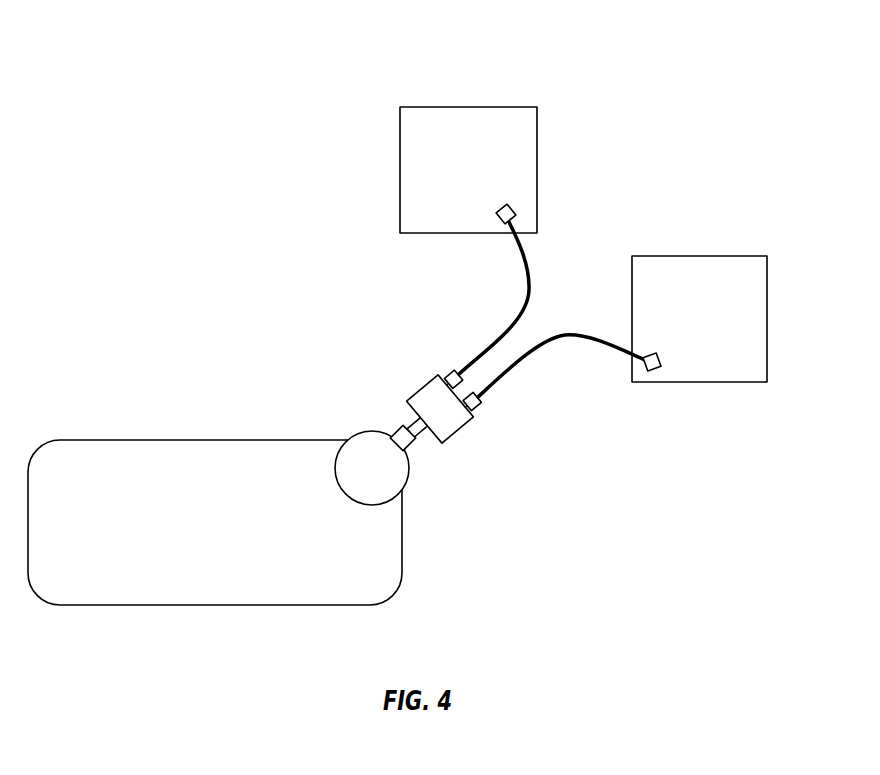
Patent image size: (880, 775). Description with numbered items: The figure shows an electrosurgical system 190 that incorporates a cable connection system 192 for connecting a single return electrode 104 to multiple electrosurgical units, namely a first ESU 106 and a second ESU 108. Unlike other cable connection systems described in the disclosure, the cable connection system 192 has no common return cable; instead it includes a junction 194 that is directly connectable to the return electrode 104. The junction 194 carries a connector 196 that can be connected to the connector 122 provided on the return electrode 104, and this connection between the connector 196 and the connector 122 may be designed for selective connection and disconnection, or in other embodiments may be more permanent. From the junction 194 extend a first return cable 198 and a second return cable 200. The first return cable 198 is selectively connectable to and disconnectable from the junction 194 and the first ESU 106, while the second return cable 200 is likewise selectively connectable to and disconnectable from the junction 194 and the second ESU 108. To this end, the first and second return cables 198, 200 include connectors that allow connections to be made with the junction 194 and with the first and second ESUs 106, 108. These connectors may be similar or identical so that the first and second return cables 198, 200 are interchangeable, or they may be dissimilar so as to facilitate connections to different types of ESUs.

The return electrode 104 is at (188, 606).
The first ESU 106 is at (502, 107).
The second ESU 108 is at (767, 290).
The connector 122 is at (393, 432).
The electrosurgical system 190 is at (194, 95).
The cable connection system 192 is at (455, 379).
The junction 194 is at (466, 424).
The connector 196 is at (427, 426).
The first return cable 198 is at (542, 262).
The second return cable 200 is at (561, 353).